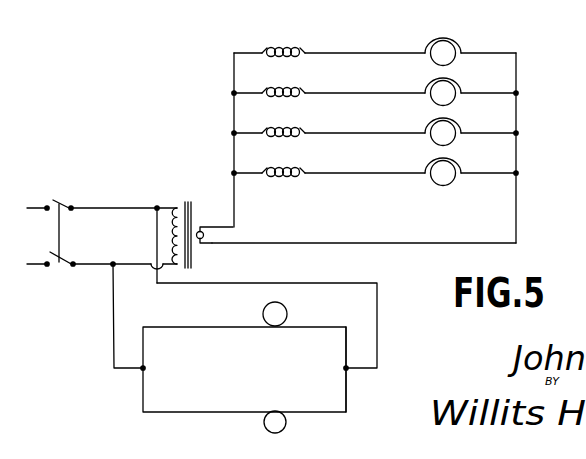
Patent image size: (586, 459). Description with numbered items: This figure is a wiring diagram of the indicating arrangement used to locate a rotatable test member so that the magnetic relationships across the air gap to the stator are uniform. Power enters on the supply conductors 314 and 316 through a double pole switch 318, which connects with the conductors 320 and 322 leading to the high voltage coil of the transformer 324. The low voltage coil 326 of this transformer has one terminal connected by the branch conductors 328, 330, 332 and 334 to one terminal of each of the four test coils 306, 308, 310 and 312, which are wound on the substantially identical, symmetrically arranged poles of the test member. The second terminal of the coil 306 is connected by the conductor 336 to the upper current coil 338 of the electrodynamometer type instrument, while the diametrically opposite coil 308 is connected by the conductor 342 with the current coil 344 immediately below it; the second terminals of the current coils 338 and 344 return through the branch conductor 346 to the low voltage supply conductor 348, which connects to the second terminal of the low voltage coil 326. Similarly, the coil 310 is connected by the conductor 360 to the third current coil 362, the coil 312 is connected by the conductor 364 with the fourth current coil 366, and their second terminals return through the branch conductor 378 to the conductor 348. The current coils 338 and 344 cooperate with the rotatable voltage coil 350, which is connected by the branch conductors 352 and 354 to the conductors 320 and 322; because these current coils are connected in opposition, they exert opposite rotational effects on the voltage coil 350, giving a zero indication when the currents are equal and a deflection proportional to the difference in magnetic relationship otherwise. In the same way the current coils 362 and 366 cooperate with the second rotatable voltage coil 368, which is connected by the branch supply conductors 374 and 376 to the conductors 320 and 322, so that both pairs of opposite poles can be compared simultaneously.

The coil 306 is at (296, 45).
The coil 308 is at (297, 86).
The coil 310 is at (298, 127).
The coil 312 is at (298, 167).
The supply conductor 314 is at (36, 203).
The supply conductor 316 is at (29, 267).
The double pole switch 318 is at (57, 200).
The conductor 320 is at (117, 208).
The conductor 322 is at (76, 268).
The transformer 324 is at (185, 202).
The low voltage coil 326 is at (199, 245).
The branch conductor 328 is at (249, 52).
The branch conductor 330 is at (250, 93).
The branch conductor 332 is at (247, 133).
The branch conductor 334 is at (247, 173).
The conductor 336 is at (362, 53).
The upper current coil 338 is at (447, 39).
The conductor 342 is at (364, 93).
The current coil 344 is at (447, 80).
The branch conductor 346 is at (518, 100).
The low voltage supply conductor 348 is at (322, 243).
The rotatable voltage coil 350 is at (265, 308).
The branch conductor 352 is at (315, 327).
The branch conductor 354 is at (189, 327).
The conductor 360 is at (362, 133).
The third current coil 362 is at (447, 121).
The conductor 364 is at (362, 173).
The fourth current coil 366 is at (447, 161).
The rotatable voltage coil 368 is at (265, 425).
The branch supply conductor 374 is at (337, 412).
The branch supply conductor 376 is at (163, 412).
The branch conductor 378 is at (518, 153).